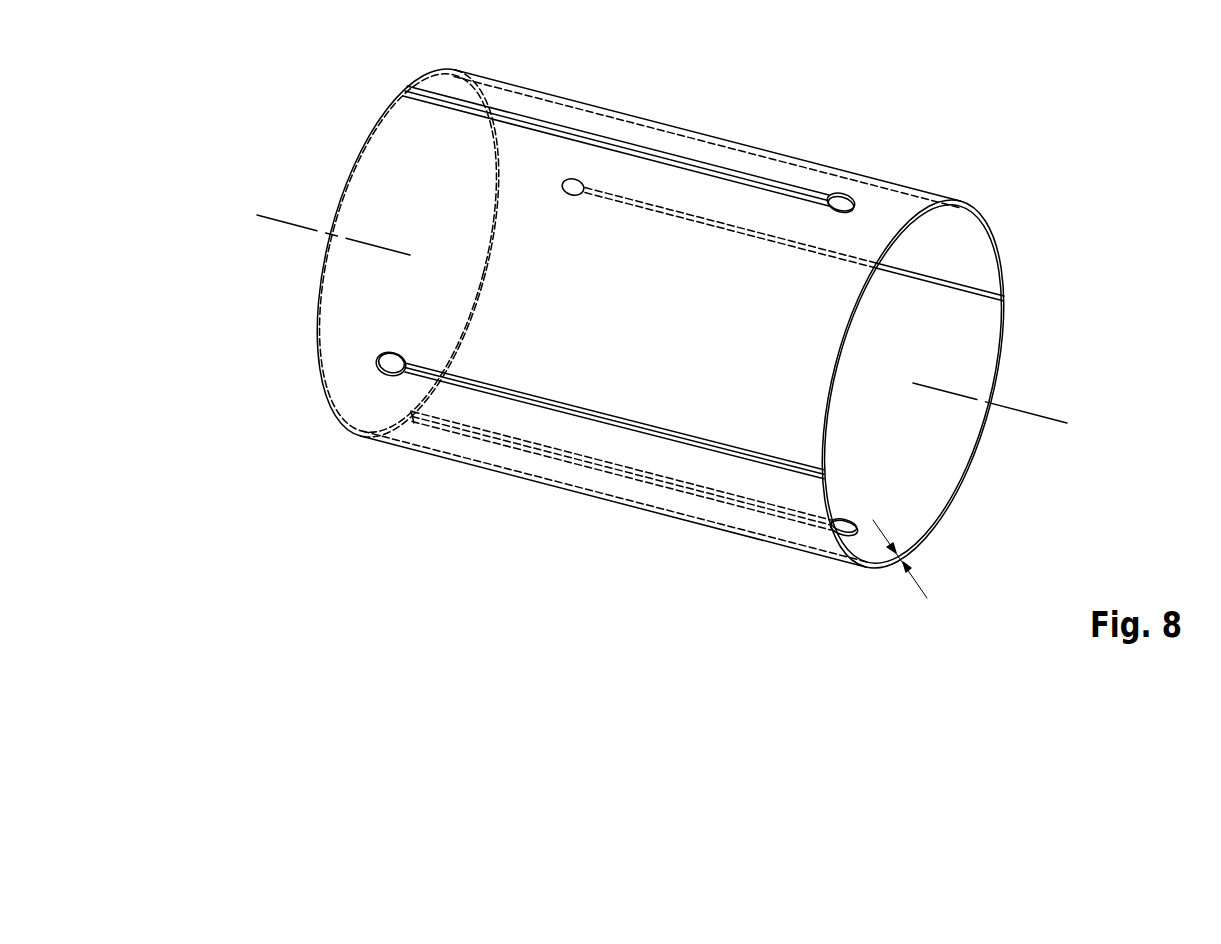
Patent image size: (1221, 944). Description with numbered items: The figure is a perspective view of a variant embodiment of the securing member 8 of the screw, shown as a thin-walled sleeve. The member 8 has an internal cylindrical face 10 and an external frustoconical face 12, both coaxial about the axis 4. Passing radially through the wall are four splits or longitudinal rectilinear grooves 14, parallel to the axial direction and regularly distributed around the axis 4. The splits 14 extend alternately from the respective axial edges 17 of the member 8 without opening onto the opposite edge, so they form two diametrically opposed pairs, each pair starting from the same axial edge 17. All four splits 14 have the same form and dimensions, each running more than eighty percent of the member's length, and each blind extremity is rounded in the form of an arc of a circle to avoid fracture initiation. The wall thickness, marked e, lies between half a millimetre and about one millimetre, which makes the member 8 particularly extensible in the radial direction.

The securing member 8 is at (848, 130).
The external frustoconical face 12 is at (632, 113).
The axial edges 17 is at (323, 390).
The internal cylindrical face 10 is at (937, 470).
The longitudinal rectilinear grooves 14 is at (733, 168).
The axis 4 is at (305, 228).
The wall thickness e is at (907, 559).